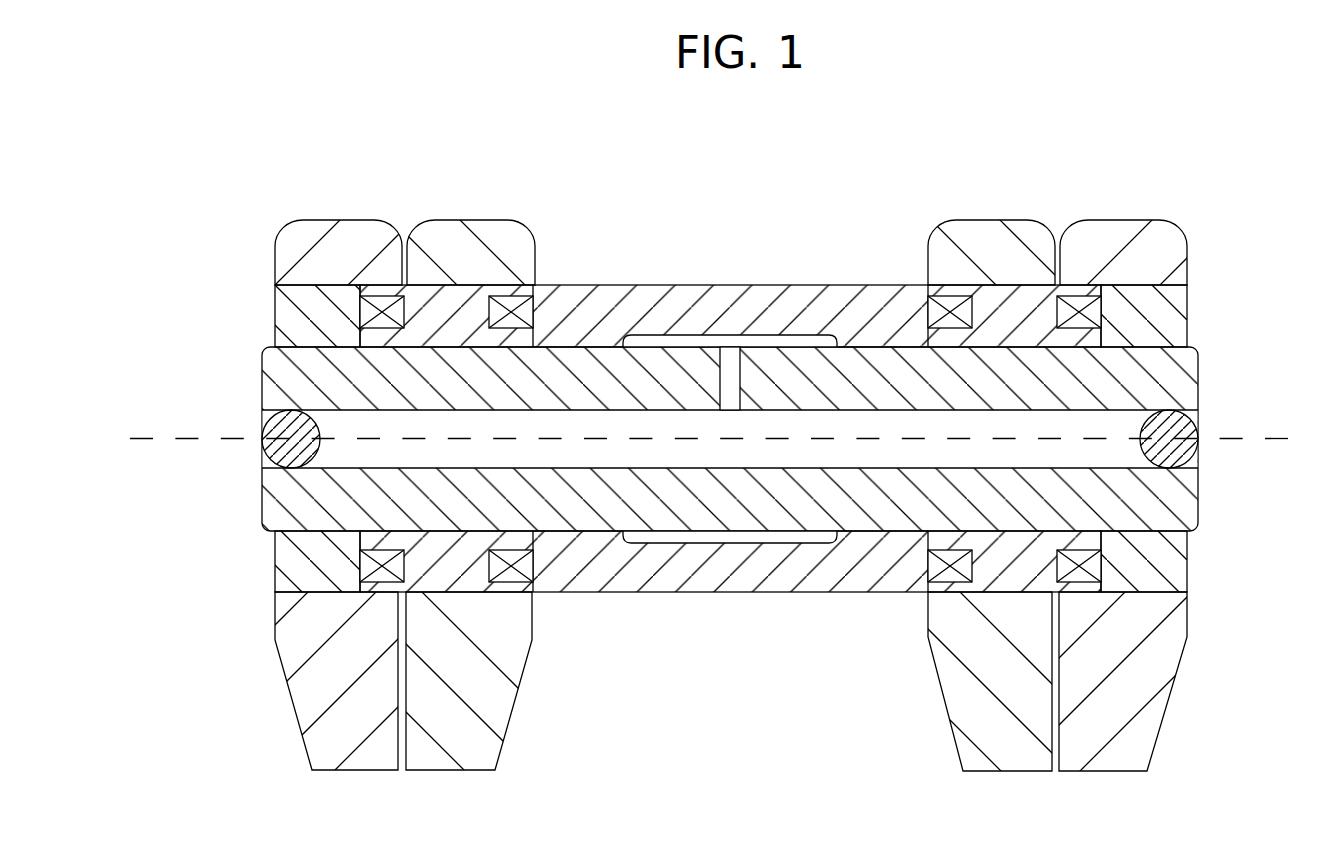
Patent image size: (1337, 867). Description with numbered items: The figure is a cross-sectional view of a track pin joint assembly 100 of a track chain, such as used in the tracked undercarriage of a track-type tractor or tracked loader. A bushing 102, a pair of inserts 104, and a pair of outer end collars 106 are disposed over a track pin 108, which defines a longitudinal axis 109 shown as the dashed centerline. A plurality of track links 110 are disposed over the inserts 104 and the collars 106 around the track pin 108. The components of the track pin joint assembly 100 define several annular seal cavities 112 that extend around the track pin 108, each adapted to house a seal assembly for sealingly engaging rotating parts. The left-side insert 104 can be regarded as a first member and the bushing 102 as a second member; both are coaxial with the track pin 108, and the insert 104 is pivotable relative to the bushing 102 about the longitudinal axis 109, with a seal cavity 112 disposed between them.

The track pin joint assembly 100 is at (970, 144).
The bushing 102 is at (723, 287).
The inserts 104 is at (527, 290).
The outer end collars 106 is at (283, 307).
The track pin 108 is at (1188, 359).
The longitudinal axis 109 is at (1235, 439).
The track links 110 is at (488, 233).
The seal cavities 112 is at (400, 312).